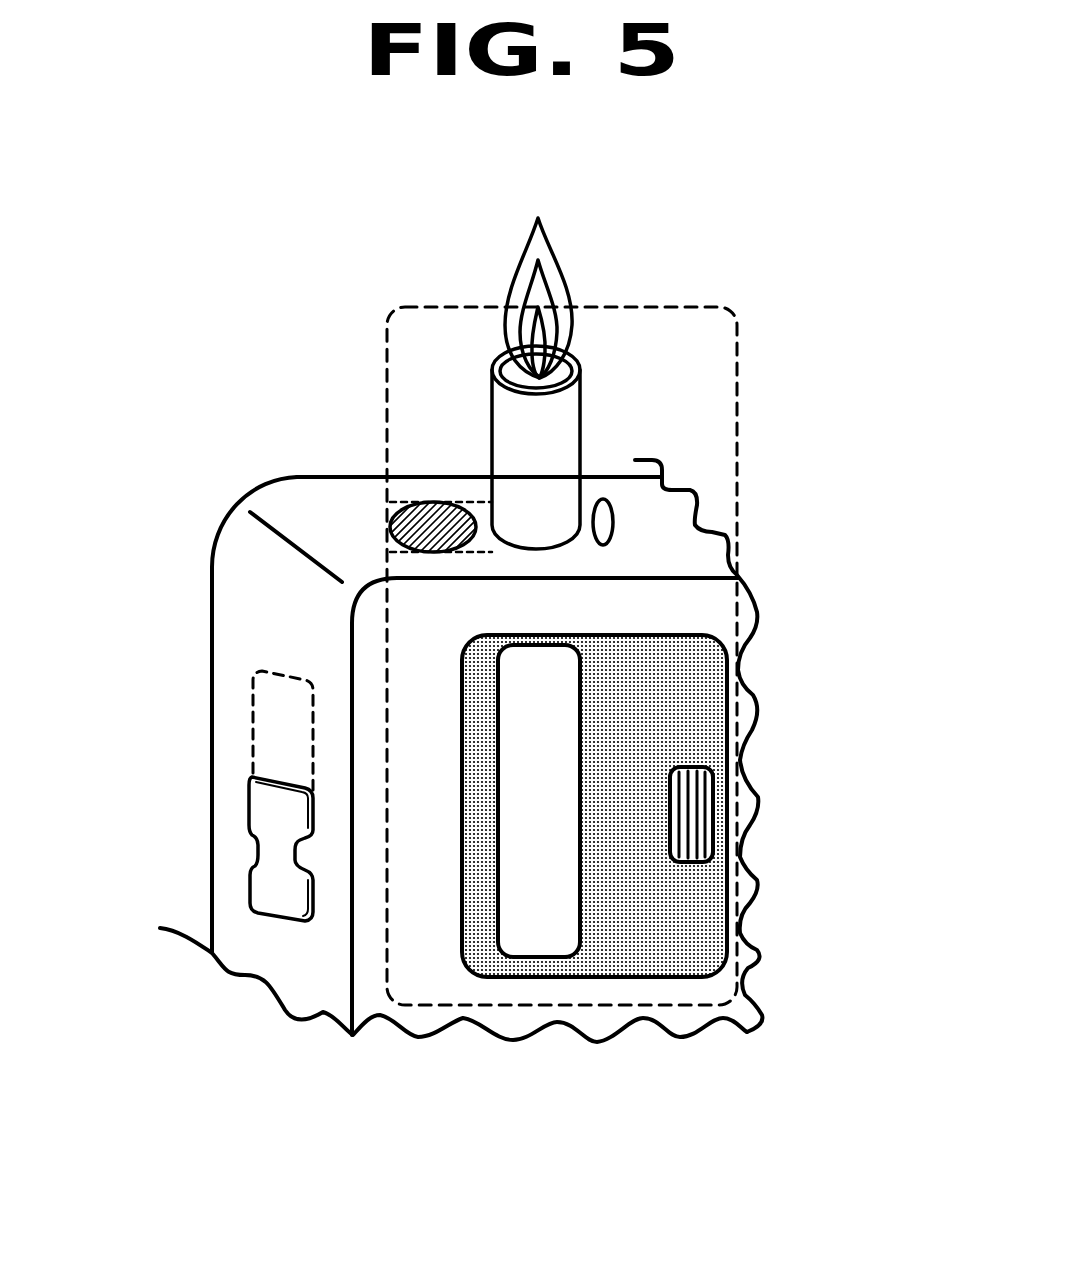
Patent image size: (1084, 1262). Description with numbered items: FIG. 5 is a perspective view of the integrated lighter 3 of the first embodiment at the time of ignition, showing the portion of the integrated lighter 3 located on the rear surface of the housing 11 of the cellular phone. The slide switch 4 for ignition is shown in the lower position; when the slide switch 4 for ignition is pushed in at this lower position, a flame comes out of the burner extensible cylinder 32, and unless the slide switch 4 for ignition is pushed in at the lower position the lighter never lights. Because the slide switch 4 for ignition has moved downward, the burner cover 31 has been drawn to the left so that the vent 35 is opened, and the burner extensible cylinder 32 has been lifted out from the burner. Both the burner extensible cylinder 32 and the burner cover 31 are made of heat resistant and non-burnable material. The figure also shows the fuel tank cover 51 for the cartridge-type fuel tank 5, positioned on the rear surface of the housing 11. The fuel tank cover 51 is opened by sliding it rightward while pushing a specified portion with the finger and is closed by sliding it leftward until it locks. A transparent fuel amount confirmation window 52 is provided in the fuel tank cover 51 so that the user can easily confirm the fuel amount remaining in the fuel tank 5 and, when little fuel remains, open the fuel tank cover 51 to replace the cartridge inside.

The integrated lighter 3 is at (585, 597).
The slide switch for ignition 4 is at (267, 845).
The fuel tank 5 is at (703, 892).
The housing 11 is at (253, 625).
The burner cover 31 is at (428, 525).
The burner extensible cylinder 32 is at (555, 457).
The vent 35 is at (605, 520).
The fuel tank cover 51 is at (655, 928).
The fuel amount confirmation window 52 is at (547, 935).